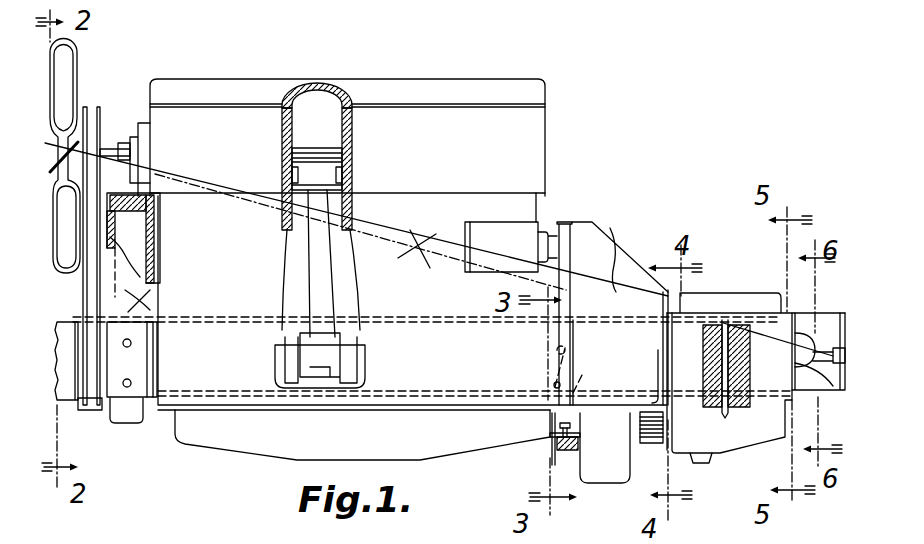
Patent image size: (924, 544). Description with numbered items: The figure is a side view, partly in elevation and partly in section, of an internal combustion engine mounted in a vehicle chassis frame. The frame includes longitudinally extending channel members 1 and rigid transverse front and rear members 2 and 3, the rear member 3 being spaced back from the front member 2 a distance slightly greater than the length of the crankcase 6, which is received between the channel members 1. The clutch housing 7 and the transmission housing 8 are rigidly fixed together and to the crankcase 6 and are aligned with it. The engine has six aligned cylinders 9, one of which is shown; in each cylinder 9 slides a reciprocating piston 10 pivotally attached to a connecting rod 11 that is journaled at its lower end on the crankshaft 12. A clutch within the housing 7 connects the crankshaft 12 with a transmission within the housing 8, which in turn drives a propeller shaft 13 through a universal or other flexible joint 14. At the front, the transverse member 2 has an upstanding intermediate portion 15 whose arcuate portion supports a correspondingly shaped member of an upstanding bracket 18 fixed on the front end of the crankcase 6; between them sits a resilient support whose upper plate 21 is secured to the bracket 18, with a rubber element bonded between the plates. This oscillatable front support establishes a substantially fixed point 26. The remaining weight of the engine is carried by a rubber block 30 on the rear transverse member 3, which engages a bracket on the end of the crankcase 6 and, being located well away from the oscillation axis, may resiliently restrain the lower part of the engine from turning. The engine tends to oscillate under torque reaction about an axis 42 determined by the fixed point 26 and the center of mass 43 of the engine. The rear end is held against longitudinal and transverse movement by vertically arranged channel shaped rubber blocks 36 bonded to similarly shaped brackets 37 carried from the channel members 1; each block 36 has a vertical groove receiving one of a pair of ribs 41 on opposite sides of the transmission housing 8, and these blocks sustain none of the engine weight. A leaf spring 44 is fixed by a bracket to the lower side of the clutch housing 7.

The longitudinal channel member 1 is at (68, 333).
The front transverse frame member 2 is at (133, 303).
The rear transverse frame member 3 is at (550, 455).
The crankcase 6 is at (517, 207).
The clutch housing 7 is at (618, 280).
The transmission housing 8 is at (713, 305).
The cylinder 9 is at (334, 130).
The piston 10 is at (347, 157).
The connecting rod 11 is at (320, 280).
The crankshaft 12 is at (352, 352).
The propeller shaft 13 is at (838, 355).
The universal joint 14 is at (807, 362).
The upstanding intermediate portion 15 is at (112, 240).
The upstanding bracket 18 is at (153, 230).
The upper plate 21 is at (133, 178).
The fixed point 26 is at (115, 160).
The rubber block 30 is at (500, 462).
The channel shaped rubber block 36 is at (720, 406).
The bracket 37 is at (702, 366).
The rib 41 is at (722, 412).
The axis 42 is at (425, 264).
The center of mass 43 is at (418, 230).
The leaf spring 44 is at (653, 443).